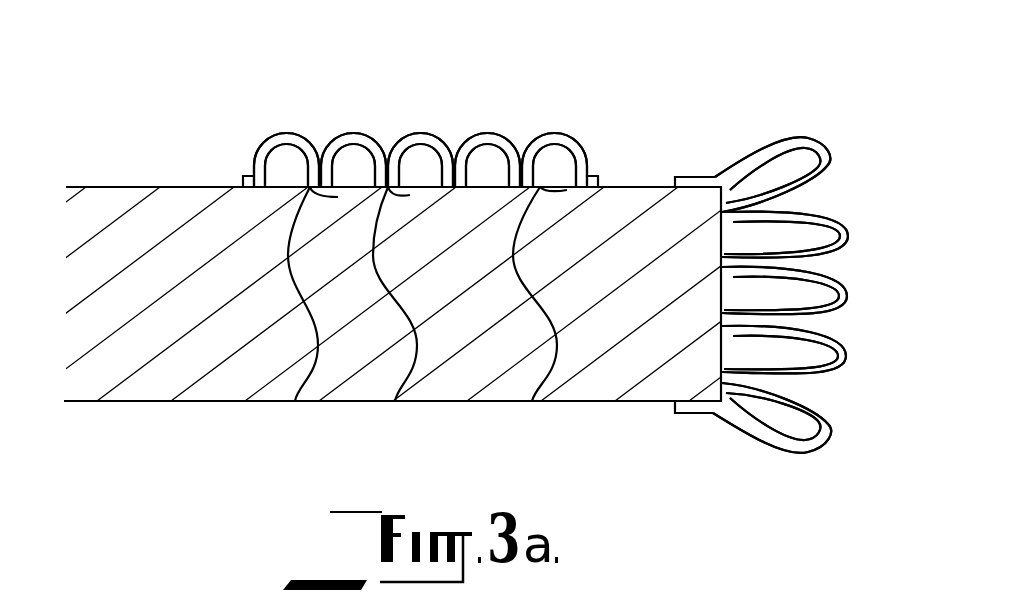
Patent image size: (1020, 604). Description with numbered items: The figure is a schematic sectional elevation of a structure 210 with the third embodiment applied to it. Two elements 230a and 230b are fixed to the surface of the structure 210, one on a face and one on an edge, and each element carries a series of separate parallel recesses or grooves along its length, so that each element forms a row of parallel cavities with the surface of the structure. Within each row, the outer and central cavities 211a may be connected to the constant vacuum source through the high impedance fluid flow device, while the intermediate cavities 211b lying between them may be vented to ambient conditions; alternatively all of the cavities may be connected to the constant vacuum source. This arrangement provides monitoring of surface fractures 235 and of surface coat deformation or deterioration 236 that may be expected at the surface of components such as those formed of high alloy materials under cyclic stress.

The structure 210 is at (108, 200).
The outer and central cavities 211a is at (287, 152).
The intermediate cavities 211b is at (357, 152).
The element 230a is at (445, 143).
The element 230b is at (807, 140).
The surface fractures 235 is at (295, 401).
The surface coat deformation or deterioration 236 is at (532, 401).